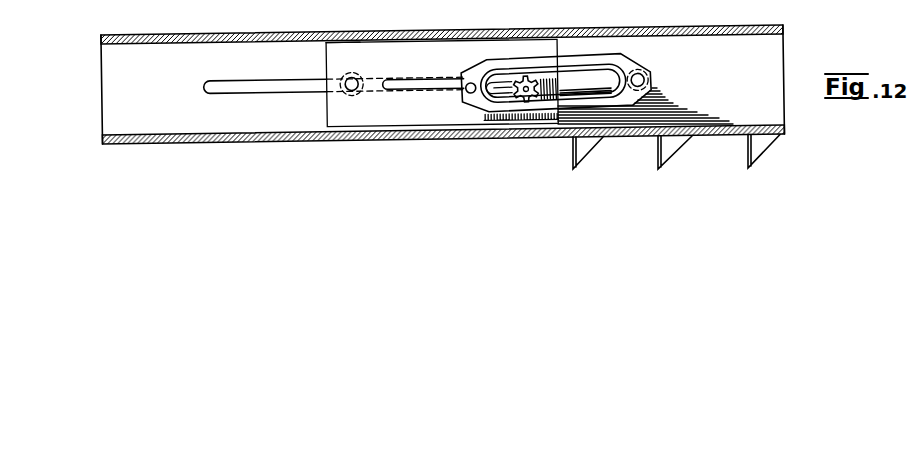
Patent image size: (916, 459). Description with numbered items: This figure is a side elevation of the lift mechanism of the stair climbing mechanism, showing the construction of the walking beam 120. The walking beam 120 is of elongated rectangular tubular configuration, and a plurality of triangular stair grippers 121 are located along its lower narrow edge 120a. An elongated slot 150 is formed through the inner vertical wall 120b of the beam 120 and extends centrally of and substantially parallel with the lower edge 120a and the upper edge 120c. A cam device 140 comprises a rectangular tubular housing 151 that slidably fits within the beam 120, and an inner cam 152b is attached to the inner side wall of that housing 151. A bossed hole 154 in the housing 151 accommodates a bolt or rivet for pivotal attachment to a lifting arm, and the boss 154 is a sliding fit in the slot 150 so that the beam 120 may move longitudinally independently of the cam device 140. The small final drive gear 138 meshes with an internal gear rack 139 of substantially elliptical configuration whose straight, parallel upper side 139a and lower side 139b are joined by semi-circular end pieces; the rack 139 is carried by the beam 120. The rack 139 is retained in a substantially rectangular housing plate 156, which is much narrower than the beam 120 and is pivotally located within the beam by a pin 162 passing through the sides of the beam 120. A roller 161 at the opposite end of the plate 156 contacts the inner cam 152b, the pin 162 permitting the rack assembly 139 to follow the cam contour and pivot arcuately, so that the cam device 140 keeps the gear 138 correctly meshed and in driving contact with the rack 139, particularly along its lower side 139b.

The walking beam 120 is at (143, 144).
The lower edge 120a is at (435, 137).
The inner vertical wall 120b is at (128, 103).
The upper edge 120c is at (442, 27).
The stair grippers 121 is at (667, 145).
The final drive gear 138 is at (525, 76).
The gear rack 139 is at (622, 72).
The upper side 139a is at (580, 68).
The lower side 139b is at (567, 97).
The cam device 140 is at (383, 127).
The slot 150 is at (268, 86).
The housing 151 is at (339, 42).
The inner cam 152b is at (398, 84).
The bossed hole 154 is at (351, 78).
The housing plate 156 is at (534, 105).
The roller 161 is at (462, 83).
The pin 162 is at (654, 73).